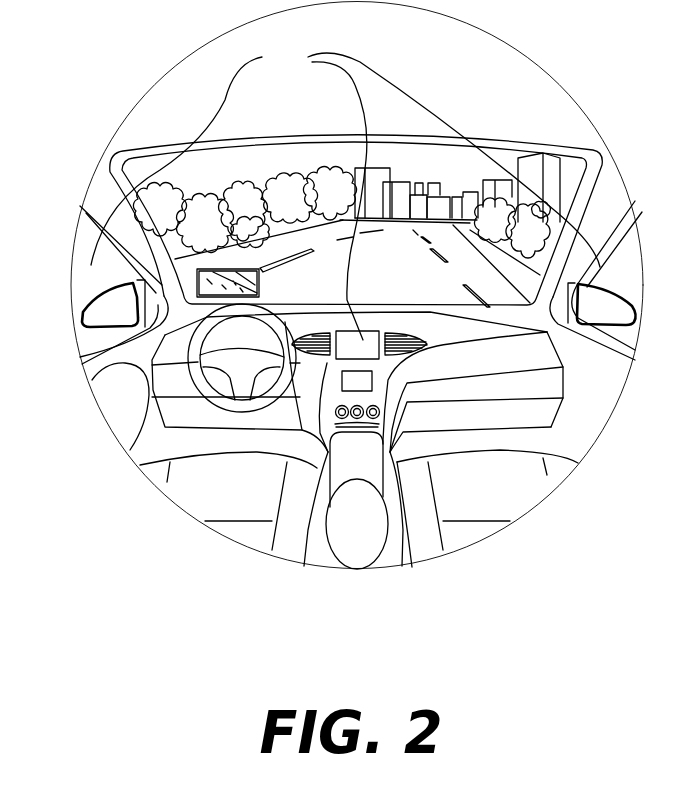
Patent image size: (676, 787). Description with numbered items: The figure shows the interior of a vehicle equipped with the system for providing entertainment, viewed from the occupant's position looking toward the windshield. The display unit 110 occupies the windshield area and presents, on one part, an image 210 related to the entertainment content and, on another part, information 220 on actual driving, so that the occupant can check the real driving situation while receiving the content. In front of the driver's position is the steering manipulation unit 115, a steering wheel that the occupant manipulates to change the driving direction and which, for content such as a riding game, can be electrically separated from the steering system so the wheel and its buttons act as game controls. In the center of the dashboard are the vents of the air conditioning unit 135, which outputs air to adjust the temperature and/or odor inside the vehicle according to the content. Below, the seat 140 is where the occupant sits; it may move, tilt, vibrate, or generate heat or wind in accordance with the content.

The display unit 110 is at (236, 91).
The image related to the content 210 is at (290, 160).
The information on actual driving 220 is at (238, 268).
The steering manipulation unit 115 is at (200, 382).
The air conditioning unit 135 is at (394, 355).
The seat 140 is at (215, 527).